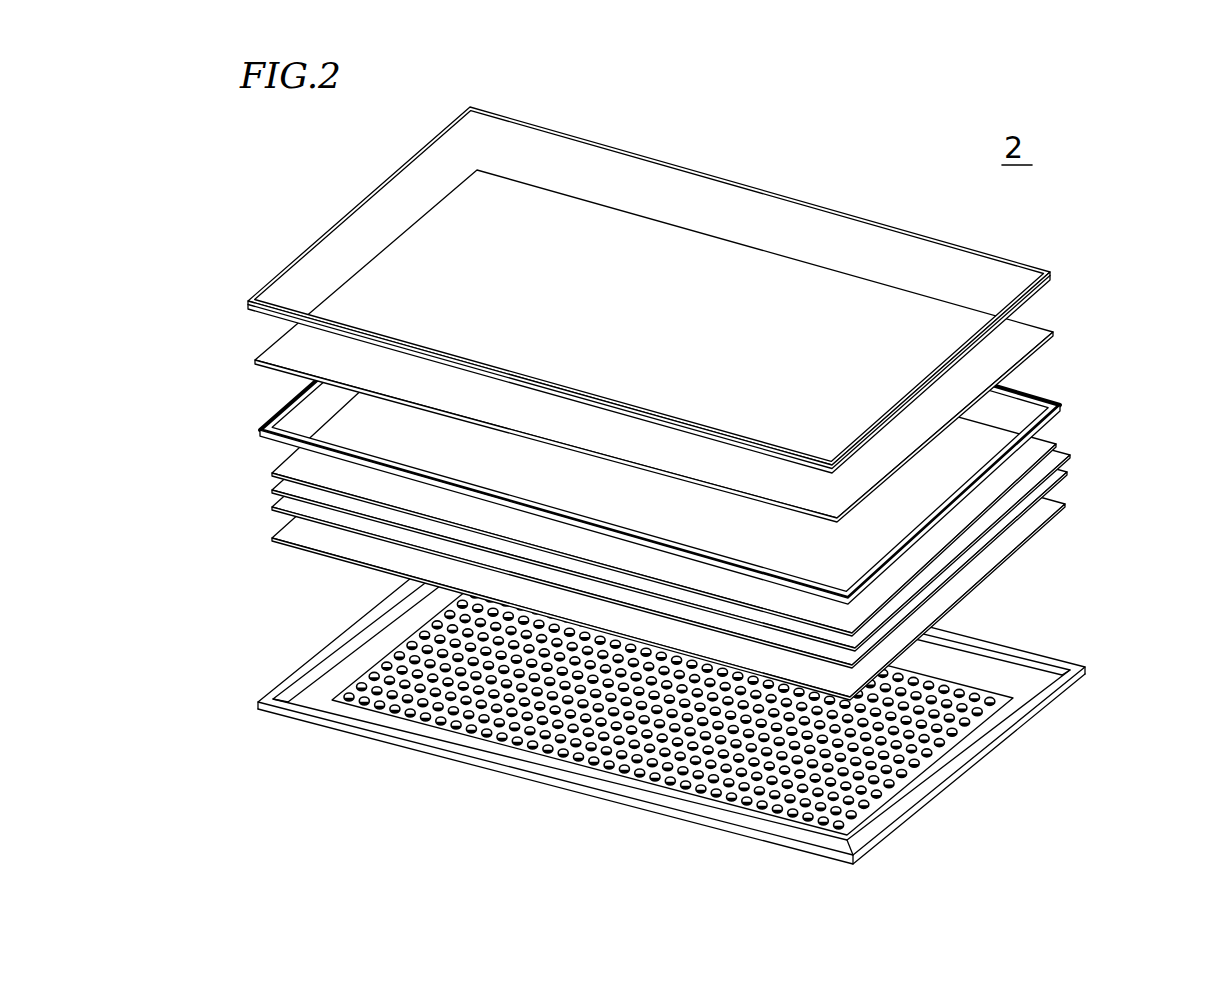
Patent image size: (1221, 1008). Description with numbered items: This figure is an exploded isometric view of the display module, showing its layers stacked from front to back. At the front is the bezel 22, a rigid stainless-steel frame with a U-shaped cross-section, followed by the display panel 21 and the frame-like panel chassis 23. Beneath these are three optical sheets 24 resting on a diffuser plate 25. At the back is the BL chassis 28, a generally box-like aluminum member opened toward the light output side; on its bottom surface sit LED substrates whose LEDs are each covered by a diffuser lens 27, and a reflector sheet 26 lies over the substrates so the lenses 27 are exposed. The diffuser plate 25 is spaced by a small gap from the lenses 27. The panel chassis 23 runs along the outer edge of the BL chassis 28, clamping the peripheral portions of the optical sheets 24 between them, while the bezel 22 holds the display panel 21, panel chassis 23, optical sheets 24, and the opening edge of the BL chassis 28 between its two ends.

The display panel 21 is at (1040, 346).
The bezel 22 is at (1037, 292).
The panel chassis 23 is at (1060, 394).
The optical sheets 24 is at (1068, 478).
The diffuser plate 25 is at (1062, 507).
The reflector sheet 26 is at (975, 723).
The diffuser lenses 27 is at (845, 825).
The BL chassis 28 is at (1065, 663).